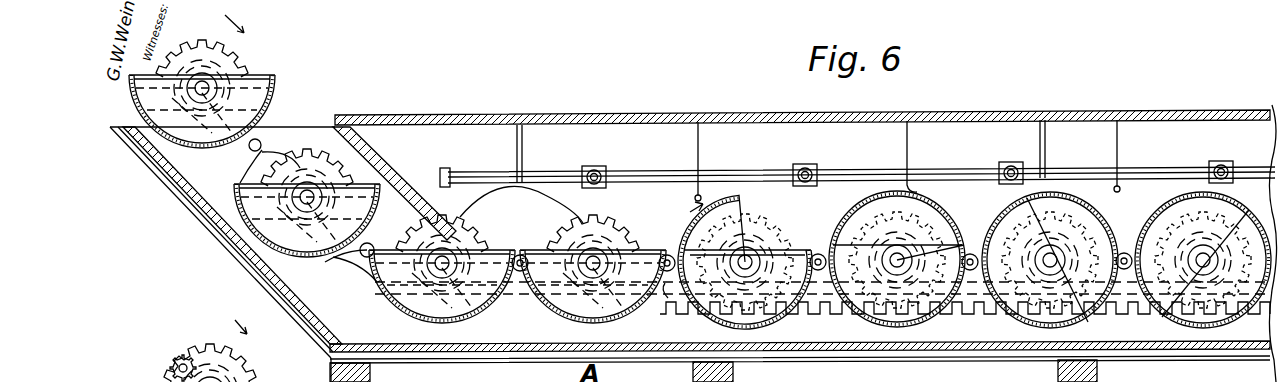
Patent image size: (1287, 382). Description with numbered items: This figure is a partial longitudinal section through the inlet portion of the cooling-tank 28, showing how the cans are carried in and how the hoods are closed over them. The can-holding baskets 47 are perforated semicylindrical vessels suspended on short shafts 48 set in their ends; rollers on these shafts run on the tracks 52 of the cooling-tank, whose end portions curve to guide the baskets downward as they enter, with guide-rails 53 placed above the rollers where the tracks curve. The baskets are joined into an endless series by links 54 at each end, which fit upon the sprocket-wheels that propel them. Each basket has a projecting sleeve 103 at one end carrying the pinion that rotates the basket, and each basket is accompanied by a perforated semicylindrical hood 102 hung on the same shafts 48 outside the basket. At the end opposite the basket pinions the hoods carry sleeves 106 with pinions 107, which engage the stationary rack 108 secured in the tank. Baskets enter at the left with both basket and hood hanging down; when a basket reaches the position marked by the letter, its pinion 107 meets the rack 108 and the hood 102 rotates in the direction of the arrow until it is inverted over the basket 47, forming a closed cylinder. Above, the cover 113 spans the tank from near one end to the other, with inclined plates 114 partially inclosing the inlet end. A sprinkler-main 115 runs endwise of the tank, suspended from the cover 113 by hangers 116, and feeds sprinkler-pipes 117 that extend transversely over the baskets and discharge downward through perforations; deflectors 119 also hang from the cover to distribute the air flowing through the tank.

The cooling-tank 28 is at (851, 350).
The can-holding basket 47 is at (901, 331).
The shaft 48 is at (611, 262).
The track 52 is at (352, 284).
The guide-rail 53 is at (320, 132).
The link 54 is at (262, 152).
The hood 102 is at (1118, 227).
The projecting sleeve 103 is at (490, 318).
The sleeve 106 is at (448, 260).
The pinion 107 is at (213, 64).
The rack 108 is at (796, 332).
The cover 113 is at (785, 121).
The inclined plate 114 is at (394, 183).
The sprinkler-main 115 is at (949, 172).
The hanger 116 is at (524, 148).
The sprinkler-pipe 117 is at (607, 172).
The deflector 119 is at (701, 151).